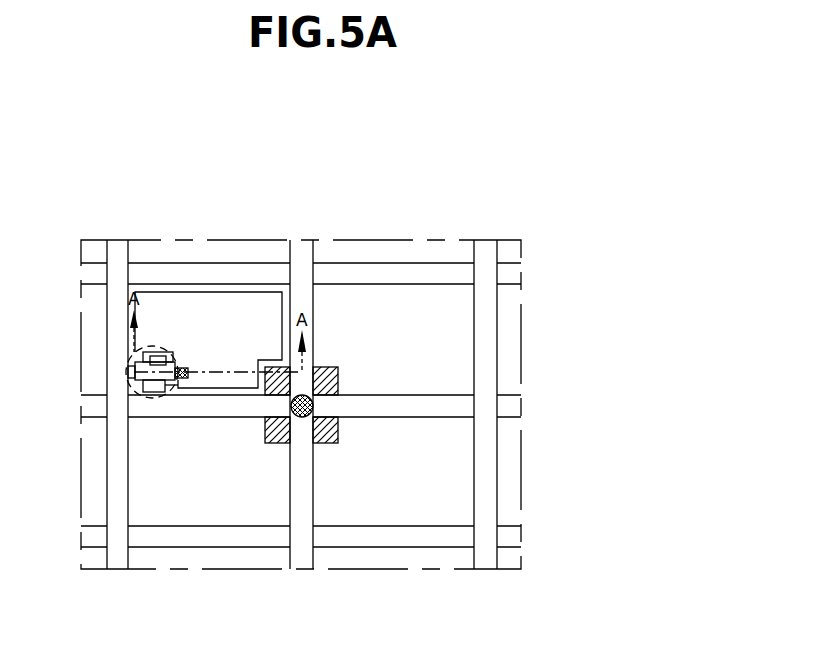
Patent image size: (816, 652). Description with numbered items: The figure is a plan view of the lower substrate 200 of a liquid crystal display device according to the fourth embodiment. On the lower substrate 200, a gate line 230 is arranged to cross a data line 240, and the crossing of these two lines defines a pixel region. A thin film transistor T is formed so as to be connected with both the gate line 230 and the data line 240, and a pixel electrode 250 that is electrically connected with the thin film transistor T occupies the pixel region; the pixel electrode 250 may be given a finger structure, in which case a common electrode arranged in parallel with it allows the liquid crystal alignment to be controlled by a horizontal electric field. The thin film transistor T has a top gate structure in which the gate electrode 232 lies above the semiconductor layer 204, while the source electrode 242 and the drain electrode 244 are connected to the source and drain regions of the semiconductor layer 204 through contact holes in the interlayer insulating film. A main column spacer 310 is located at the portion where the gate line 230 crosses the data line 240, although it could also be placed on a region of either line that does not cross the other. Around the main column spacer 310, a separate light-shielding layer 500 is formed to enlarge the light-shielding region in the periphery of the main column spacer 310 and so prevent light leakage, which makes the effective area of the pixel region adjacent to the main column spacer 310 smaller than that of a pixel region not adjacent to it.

The lower substrate 200 is at (547, 212).
The gate line 230 is at (517, 275).
The data line 240 is at (300, 266).
The pixel electrode 250 is at (206, 318).
The separate light-shielding layer 500 is at (331, 367).
The main column spacer 310 is at (302, 417).
The drain electrode 244 is at (152, 357).
The semiconductor layer 204 is at (160, 370).
The thin film transistor T is at (125, 379).
The source electrode 242 is at (150, 384).
The gate electrode 232 is at (160, 392).